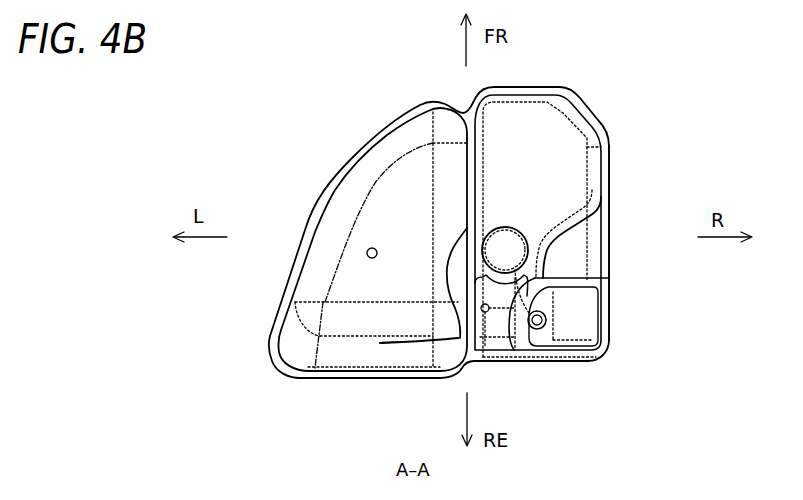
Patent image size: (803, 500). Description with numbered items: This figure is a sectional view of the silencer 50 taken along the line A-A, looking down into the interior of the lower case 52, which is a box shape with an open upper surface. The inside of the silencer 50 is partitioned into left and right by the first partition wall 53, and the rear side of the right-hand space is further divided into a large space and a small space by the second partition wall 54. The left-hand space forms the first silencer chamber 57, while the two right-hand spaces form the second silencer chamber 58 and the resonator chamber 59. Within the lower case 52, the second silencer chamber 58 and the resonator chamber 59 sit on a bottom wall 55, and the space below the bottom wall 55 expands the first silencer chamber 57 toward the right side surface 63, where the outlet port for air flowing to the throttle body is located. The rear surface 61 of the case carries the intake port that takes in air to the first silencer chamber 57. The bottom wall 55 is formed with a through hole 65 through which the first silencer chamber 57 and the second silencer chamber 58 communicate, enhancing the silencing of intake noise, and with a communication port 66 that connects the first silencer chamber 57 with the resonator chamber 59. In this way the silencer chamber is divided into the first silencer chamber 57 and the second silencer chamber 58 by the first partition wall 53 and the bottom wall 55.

The silencer 50 is at (322, 78).
The lower case 52 is at (322, 195).
The first partition wall 53 is at (460, 193).
The second partition wall 54 is at (615, 253).
The bottom wall 55 is at (605, 155).
The first silencer chamber 57 is at (408, 226).
The second silencer chamber 58 is at (558, 196).
The resonator chamber 59 is at (598, 325).
The rear surface 61 is at (345, 382).
The right side surface 63 is at (613, 269).
The through hole 65 is at (497, 227).
The communication port 66 is at (536, 330).